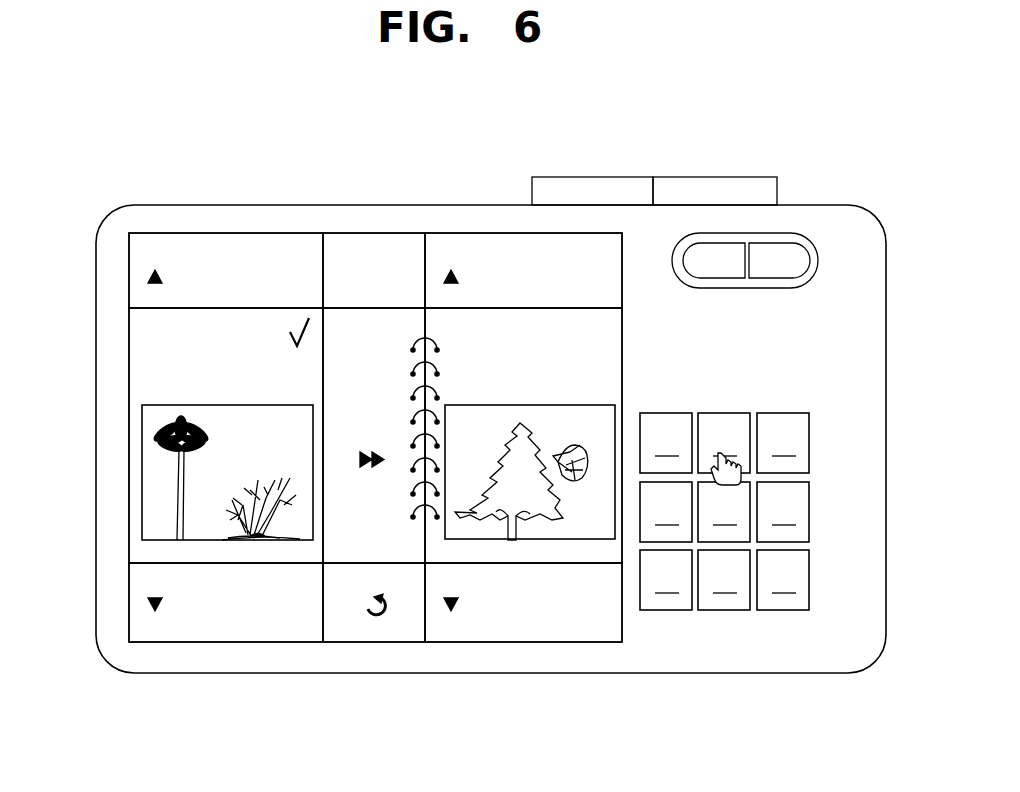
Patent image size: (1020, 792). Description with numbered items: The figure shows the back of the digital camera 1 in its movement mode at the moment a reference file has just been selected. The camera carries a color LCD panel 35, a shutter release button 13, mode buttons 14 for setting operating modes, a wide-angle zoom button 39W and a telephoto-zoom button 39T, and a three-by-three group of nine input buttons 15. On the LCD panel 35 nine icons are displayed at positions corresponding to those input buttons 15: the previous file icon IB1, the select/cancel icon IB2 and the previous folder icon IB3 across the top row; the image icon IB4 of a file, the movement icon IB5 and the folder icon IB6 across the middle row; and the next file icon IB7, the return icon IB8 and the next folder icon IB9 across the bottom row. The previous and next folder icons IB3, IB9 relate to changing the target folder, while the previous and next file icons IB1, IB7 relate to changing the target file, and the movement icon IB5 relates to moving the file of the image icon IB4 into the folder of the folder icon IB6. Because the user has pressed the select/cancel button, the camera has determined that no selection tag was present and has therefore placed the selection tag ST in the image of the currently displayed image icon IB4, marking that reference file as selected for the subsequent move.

The digital camera 1 is at (160, 122).
The shutter release button 13 is at (720, 187).
The mode buttons 14 is at (587, 187).
The input buttons 15 is at (728, 616).
The color LCD panel 35 is at (400, 232).
The wide-angle zoom button 39W is at (722, 270).
The telephoto-zoom button 39T is at (775, 268).
The selection tag ST is at (303, 315).
The previous file icon IB1 is at (134, 255).
The select/cancel icon IB2 is at (360, 233).
The previous folder icon IB3 is at (497, 233).
The image icon IB4 is at (146, 387).
The movement icon IB5 is at (347, 553).
The folder icon IB6 is at (612, 388).
The next file icon IB7 is at (146, 585).
The return icon IB8 is at (388, 630).
The next folder icon IB9 is at (531, 628).